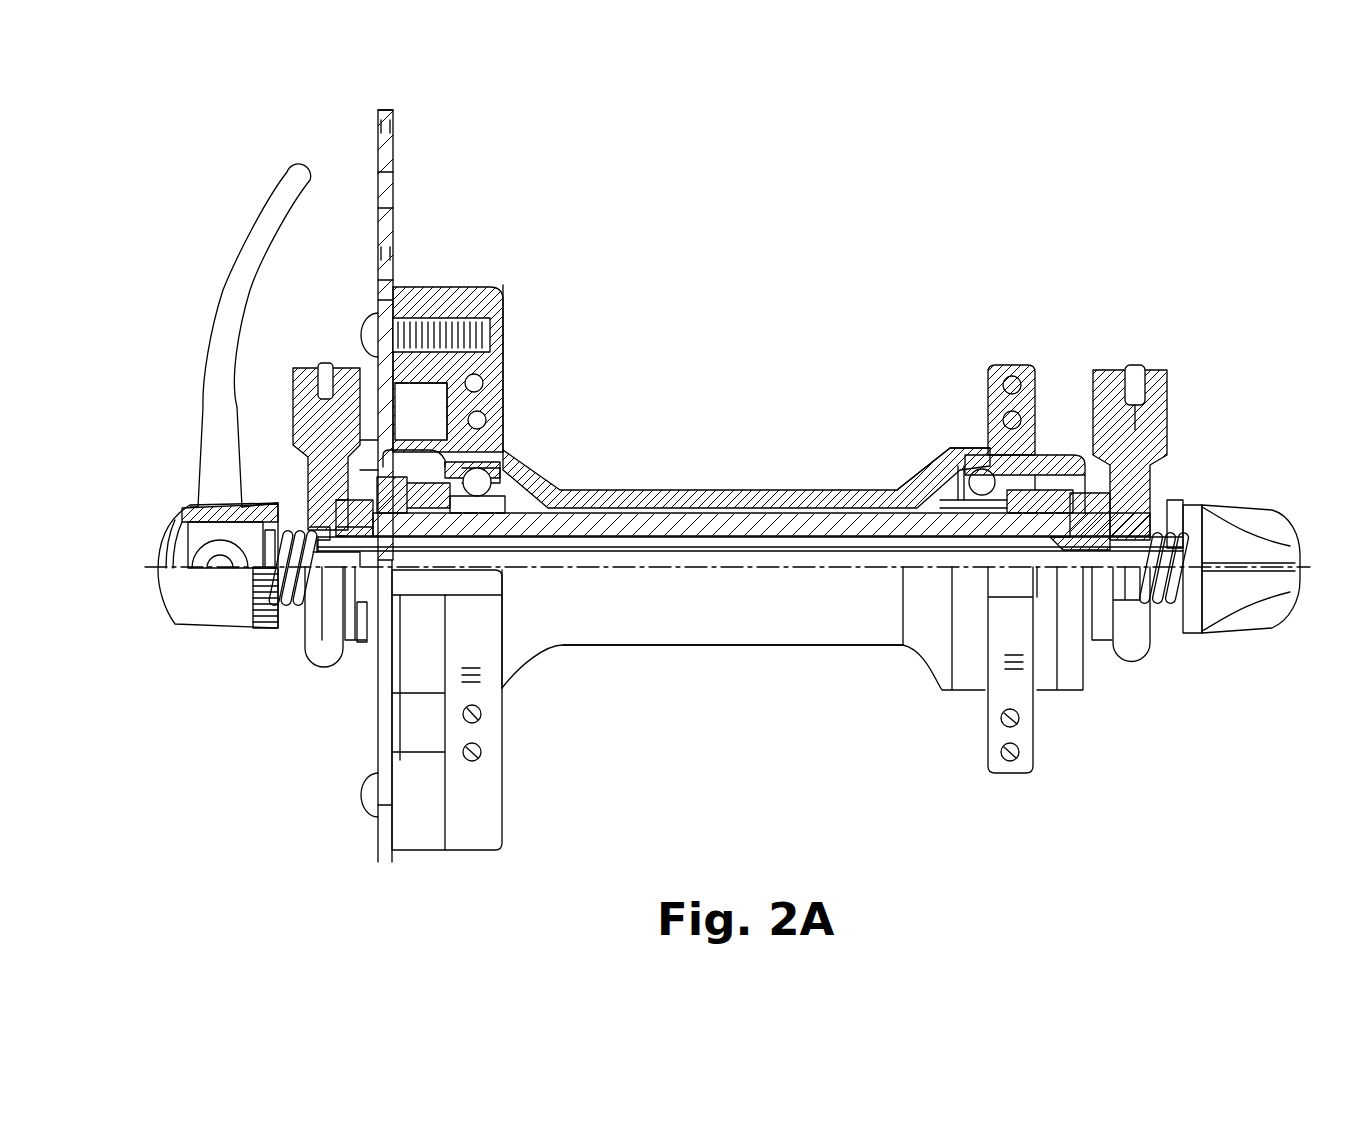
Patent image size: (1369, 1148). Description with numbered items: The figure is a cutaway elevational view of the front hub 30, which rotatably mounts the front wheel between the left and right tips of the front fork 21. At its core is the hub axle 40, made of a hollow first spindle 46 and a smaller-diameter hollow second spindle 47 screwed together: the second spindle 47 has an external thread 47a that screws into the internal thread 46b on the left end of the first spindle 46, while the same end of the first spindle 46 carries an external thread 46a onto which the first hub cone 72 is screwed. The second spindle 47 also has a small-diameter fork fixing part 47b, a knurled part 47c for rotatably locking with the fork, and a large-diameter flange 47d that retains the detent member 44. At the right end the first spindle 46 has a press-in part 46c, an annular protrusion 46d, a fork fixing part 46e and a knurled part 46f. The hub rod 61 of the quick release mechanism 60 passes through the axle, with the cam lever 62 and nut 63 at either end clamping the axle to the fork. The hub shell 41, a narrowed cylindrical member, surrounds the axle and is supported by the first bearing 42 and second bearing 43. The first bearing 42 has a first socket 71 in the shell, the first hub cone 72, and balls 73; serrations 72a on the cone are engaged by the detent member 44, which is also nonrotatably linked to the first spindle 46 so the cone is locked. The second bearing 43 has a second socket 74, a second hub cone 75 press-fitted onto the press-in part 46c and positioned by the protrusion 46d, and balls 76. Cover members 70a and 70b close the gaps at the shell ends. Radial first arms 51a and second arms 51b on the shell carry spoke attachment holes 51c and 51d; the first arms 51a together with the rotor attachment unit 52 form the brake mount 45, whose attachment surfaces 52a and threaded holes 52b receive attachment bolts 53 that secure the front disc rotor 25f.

The front fork 21 is at (326, 400).
The front disc rotor 25f is at (392, 215).
The front hub 30 is at (748, 406).
The hub axle 40 is at (937, 467).
The hub shell 41 is at (757, 496).
The first bearing 42 is at (512, 478).
The second bearing 43 is at (962, 464).
The detent member 44 is at (340, 470).
The brake mount 45 is at (466, 261).
The first spindle 46 is at (637, 500).
The external thread 46a is at (535, 493).
The internal thread 46b is at (403, 597).
The press-in part 46c is at (1107, 440).
The annular protrusion 46d is at (1148, 440).
The fork fixing part 46e is at (1172, 478).
The knurled part 46f is at (1125, 510).
The second spindle 47 is at (358, 655).
The external thread 47a is at (425, 530).
The fork fixing part 47b is at (330, 617).
The knurled part 47c is at (307, 500).
The flange 47d is at (340, 660).
The first arms 51a is at (503, 417).
The second arms 51b is at (990, 404).
The spoke attachment hole 51c is at (503, 397).
The spoke attachment hole 51d is at (503, 427).
The rotor attachment unit 52 is at (414, 283).
The attachment surface 52a is at (378, 300).
The threaded hole 52b is at (508, 290).
The attachment bolt 53 is at (368, 325).
The quick release mechanism 60 is at (208, 318).
The hub rod 61 is at (825, 557).
The cam lever 62 is at (243, 240).
The nut 63 is at (1240, 513).
The cover member 70a is at (372, 458).
The cover member 70b is at (1068, 442).
The first socket 71 is at (502, 459).
The first hub cone 72 is at (500, 518).
The serrations 72a is at (322, 508).
The balls 73 is at (505, 425).
The second socket 74 is at (970, 468).
The second hub cone 75 is at (1035, 476).
The balls 76 is at (952, 452).